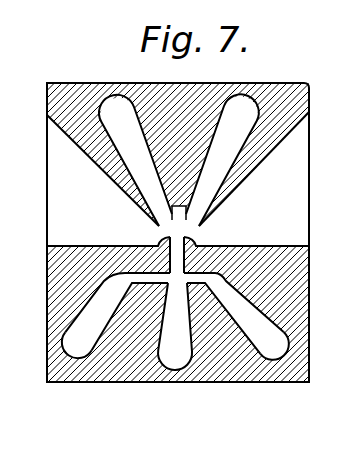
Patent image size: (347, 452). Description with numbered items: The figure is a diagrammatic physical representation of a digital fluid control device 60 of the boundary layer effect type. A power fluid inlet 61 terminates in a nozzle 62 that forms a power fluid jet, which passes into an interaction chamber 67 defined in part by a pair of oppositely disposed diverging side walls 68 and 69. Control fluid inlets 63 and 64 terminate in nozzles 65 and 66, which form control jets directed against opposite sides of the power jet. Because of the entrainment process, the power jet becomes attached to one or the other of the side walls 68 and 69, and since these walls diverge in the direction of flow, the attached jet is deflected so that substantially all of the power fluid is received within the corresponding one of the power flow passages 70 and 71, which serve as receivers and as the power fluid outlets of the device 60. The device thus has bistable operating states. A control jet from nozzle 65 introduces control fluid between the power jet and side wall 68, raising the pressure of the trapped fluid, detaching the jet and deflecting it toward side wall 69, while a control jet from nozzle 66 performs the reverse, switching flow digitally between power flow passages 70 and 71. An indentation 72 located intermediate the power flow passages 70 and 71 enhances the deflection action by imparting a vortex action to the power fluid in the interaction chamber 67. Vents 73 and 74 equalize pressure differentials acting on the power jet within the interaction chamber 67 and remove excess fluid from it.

The digital fluid control device 60 is at (311, 89).
The power fluid inlet 61 is at (173, 364).
The nozzle 62 is at (175, 291).
The control fluid inlet 63 is at (81, 350).
The control fluid inlet 64 is at (266, 354).
The control fluid nozzle 65 is at (150, 279).
The control fluid nozzle 66 is at (203, 279).
The interaction chamber 67 is at (196, 228).
The side wall 68 is at (163, 242).
The side wall 69 is at (194, 243).
The power flow passage 70 is at (147, 150).
The power flow passage 71 is at (207, 148).
The indentation 72 is at (179, 222).
The vent 73 is at (51, 189).
The vent 74 is at (298, 193).